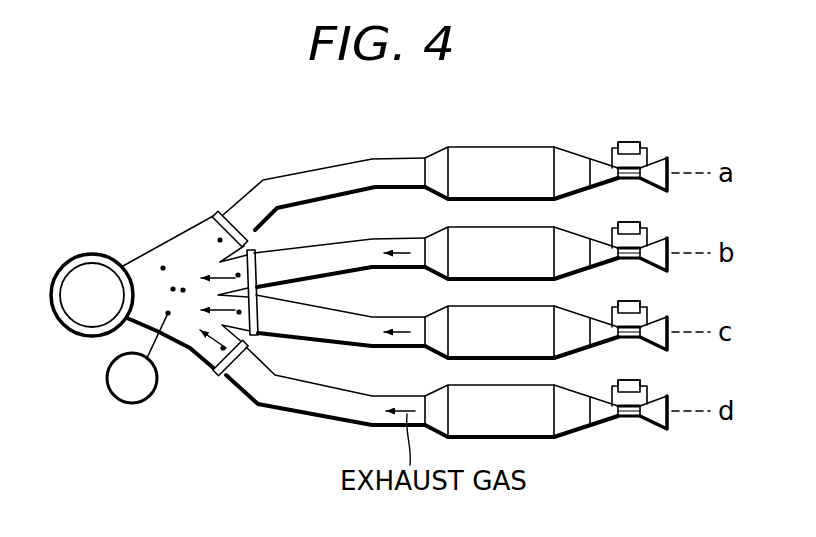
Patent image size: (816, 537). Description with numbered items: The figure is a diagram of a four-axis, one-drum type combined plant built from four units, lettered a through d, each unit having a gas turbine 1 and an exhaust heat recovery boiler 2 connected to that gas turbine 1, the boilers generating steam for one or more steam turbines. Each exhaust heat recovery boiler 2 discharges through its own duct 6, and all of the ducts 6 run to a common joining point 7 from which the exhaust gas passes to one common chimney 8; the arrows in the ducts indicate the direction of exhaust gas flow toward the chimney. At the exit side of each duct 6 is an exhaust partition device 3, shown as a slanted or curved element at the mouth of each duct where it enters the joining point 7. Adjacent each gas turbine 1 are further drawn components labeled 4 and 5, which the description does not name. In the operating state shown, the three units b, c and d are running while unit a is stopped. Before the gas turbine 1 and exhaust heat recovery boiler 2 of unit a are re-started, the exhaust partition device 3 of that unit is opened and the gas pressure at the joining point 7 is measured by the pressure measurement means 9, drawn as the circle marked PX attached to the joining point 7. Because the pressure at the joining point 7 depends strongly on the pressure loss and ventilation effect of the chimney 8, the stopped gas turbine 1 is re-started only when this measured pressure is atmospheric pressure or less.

The gas turbine 1 is at (606, 160).
The exhaust heat recovery boiler 2 is at (503, 148).
The exhaust partition device 3 is at (218, 212).
The combustor 4 is at (632, 142).
The nozzle 5 is at (665, 157).
The duct 6 is at (326, 163).
The joining point 7 is at (173, 288).
The chimney 8 is at (89, 253).
The pressure measurement means 9 is at (143, 403).